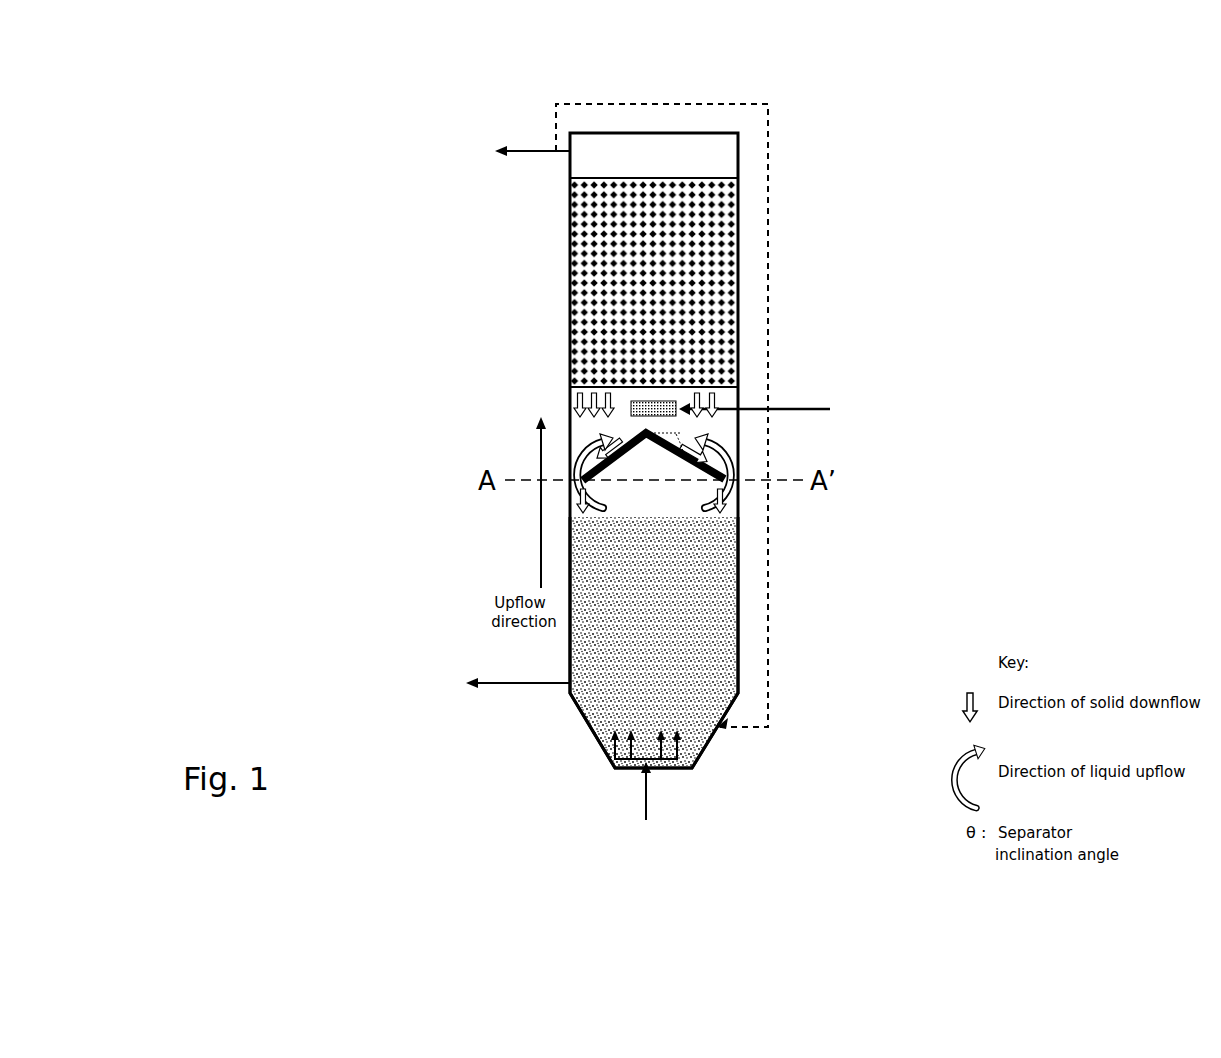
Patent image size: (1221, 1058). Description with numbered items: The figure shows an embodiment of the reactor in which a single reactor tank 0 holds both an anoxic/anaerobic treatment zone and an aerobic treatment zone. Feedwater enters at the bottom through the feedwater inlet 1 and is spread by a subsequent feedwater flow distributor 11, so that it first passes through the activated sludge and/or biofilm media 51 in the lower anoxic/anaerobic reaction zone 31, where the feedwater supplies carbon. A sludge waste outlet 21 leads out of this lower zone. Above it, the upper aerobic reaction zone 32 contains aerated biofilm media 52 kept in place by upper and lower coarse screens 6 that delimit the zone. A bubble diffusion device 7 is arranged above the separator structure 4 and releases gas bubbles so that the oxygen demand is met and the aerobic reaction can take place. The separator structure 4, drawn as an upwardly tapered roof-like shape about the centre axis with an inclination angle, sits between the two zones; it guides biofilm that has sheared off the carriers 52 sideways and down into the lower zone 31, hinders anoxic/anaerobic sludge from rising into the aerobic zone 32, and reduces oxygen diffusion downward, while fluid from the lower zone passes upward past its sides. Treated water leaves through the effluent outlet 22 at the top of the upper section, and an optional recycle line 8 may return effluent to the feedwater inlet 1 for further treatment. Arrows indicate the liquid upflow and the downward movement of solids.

The recycle line 8 is at (660, 104).
The reactor tank 0 is at (740, 577).
The screens 6 is at (736, 176).
The biofilm media 52 is at (742, 305).
The upper aerobic reaction zone 32 is at (568, 362).
The bubble diffusion device 7 is at (676, 418).
The separator structure 4 is at (697, 468).
The biofilm media 51 is at (738, 650).
The lower anoxic/anaerobic reaction zone 31 is at (740, 604).
The effluent outlet 22 is at (533, 143).
The sludge waste outlet 21 is at (518, 700).
The feedwater flow distributor 11 is at (612, 768).
The feedwater inlet 1 is at (651, 793).